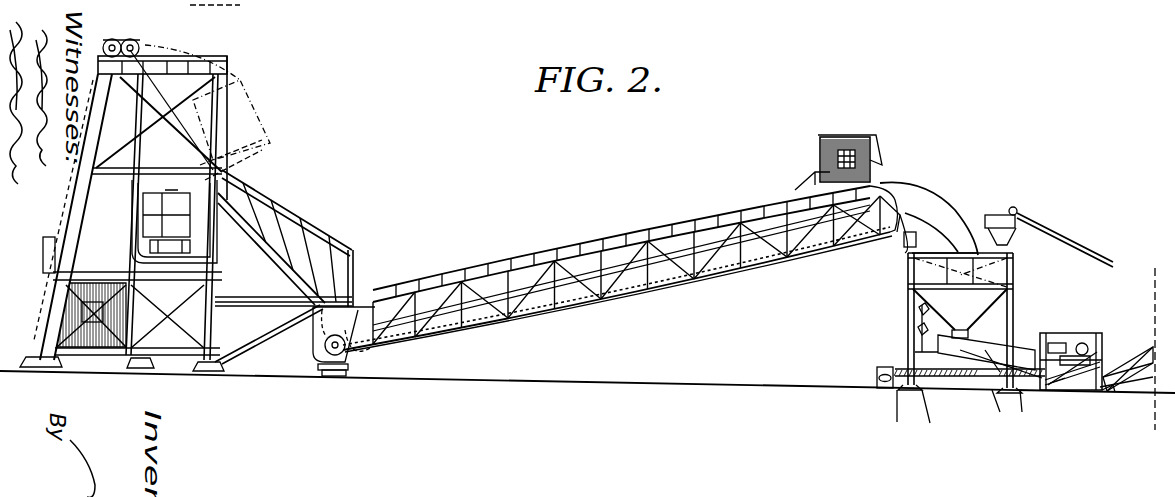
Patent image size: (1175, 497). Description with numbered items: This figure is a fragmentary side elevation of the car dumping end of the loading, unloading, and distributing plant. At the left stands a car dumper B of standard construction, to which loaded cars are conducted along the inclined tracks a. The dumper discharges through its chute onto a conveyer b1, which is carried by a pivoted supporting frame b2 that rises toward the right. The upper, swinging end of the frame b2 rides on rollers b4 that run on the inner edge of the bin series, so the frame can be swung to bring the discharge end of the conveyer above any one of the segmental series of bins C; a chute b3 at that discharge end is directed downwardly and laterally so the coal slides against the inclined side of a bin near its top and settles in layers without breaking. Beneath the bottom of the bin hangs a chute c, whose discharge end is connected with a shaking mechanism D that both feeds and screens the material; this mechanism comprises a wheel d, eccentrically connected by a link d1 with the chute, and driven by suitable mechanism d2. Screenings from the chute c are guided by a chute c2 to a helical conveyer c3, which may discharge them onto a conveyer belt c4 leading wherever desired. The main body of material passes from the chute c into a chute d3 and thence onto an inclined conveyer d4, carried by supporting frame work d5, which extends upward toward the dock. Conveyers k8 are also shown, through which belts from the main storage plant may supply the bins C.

The car dumper B is at (145, 199).
The conveyer b1 is at (563, 284).
The pivoted supporting frame b2 is at (621, 268).
The chute b3 is at (929, 213).
The rollers b4 is at (902, 246).
The bins C is at (1012, 283).
The chute c is at (983, 351).
The chute c2 is at (969, 364).
The helical conveyer c3 is at (934, 387).
The conveyer belt c4 is at (878, 371).
The shaking mechanism D is at (1071, 338).
The wheel d is at (1072, 356).
The link d1 is at (1052, 342).
The driving mechanism d2 is at (1088, 344).
The chute d3 is at (1043, 365).
The conveyer d4 is at (1120, 363).
The frame work d5 is at (1113, 390).
The conveyers k8 is at (1078, 252).
The inclined tracks a is at (1151, 372).